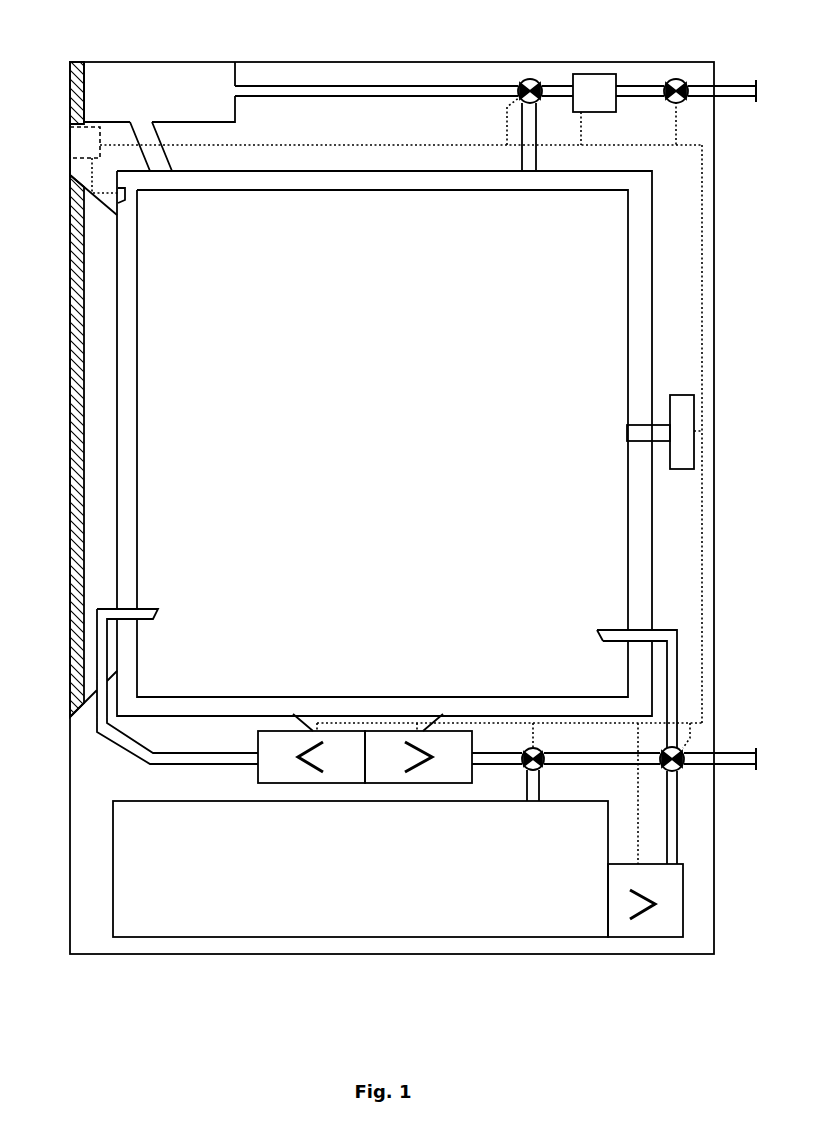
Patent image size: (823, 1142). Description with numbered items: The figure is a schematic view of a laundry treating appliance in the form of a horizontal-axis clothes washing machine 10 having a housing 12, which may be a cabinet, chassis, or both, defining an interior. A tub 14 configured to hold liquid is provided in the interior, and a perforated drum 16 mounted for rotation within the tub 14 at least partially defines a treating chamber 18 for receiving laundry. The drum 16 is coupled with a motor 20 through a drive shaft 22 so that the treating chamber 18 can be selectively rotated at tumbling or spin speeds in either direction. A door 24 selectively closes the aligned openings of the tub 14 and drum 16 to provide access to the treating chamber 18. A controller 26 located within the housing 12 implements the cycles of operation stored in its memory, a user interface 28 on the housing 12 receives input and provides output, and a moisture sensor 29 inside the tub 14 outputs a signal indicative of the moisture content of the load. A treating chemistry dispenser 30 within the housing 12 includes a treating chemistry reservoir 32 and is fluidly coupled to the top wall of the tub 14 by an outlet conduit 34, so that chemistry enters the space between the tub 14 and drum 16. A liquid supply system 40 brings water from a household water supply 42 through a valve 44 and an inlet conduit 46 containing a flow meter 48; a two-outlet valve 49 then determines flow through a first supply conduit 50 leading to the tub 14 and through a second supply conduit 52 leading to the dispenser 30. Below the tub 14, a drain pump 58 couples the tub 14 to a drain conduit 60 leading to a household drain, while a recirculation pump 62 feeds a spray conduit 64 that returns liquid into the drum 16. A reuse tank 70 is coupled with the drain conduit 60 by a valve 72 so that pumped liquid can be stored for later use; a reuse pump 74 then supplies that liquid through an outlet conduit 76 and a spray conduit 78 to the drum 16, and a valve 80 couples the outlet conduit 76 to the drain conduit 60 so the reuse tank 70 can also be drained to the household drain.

The clothes washing machine 10 is at (37, 23).
The housing 12 is at (271, 62).
The tub 14 is at (335, 171).
The drum 16 is at (364, 190).
The treating chamber 18 is at (370, 417).
The motor 20 is at (687, 452).
The drive shaft 22 is at (660, 437).
The door 24 is at (70, 349).
The controller 26 is at (66, 140).
The user interface 28 is at (66, 138).
The moisture sensor 29 is at (117, 212).
The treating chemistry dispenser 30 is at (172, 62).
The treating chemistry reservoir 32 is at (120, 101).
The outlet conduit 34 is at (158, 137).
The liquid supply system 40 is at (651, 83).
The household water supply 42 is at (735, 87).
The valve 44 is at (677, 78).
The inlet conduit 46 is at (636, 87).
The flow meter 48 is at (581, 74).
The valve 49 is at (527, 80).
The first supply conduit 50 is at (538, 158).
The second supply conduit 52 is at (492, 91).
The drain pump 58 is at (437, 774).
The drain conduit 60 is at (500, 761).
The recirculation pump 62 is at (290, 774).
The spray conduit 64 is at (108, 738).
The reuse tank 70 is at (490, 915).
The valve 72 is at (538, 769).
The reuse pump 74 is at (667, 928).
The outlet conduit 76 is at (672, 840).
The spray conduit 78 is at (672, 700).
The valve 80 is at (681, 768).